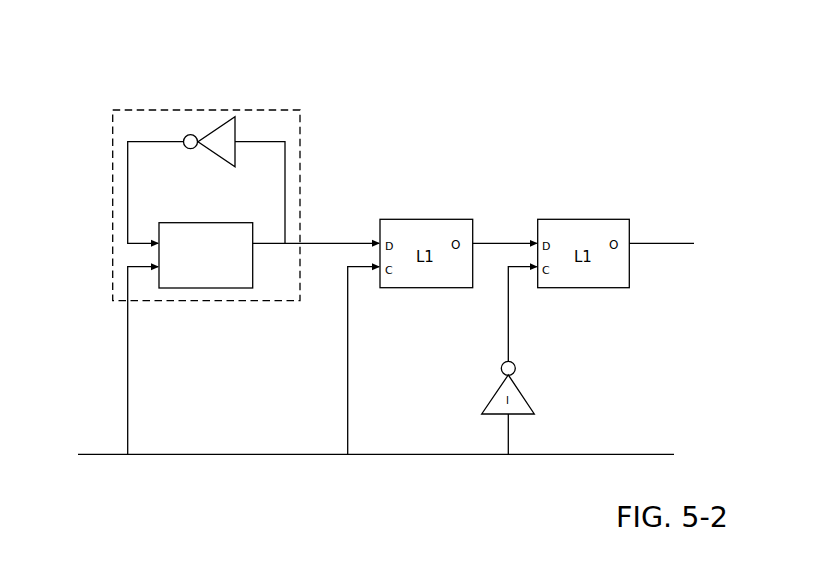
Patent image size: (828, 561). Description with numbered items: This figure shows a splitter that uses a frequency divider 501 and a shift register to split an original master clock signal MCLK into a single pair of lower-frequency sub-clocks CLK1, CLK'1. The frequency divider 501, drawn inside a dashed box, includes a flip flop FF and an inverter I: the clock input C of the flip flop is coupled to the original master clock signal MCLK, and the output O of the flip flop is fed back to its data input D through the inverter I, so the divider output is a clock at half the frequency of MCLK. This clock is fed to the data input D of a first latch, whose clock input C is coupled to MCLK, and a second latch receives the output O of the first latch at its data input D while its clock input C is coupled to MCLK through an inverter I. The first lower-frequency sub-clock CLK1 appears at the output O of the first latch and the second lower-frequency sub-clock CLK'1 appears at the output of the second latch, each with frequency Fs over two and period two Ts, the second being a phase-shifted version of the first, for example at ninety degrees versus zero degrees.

The frequency divider 501 is at (113, 110).
The first lower-frequency sub-clock CLK1 is at (504, 243).
The second lower-frequency sub-clock CLK'1 is at (661, 197).
The original master clock signal MCLK is at (349, 457).